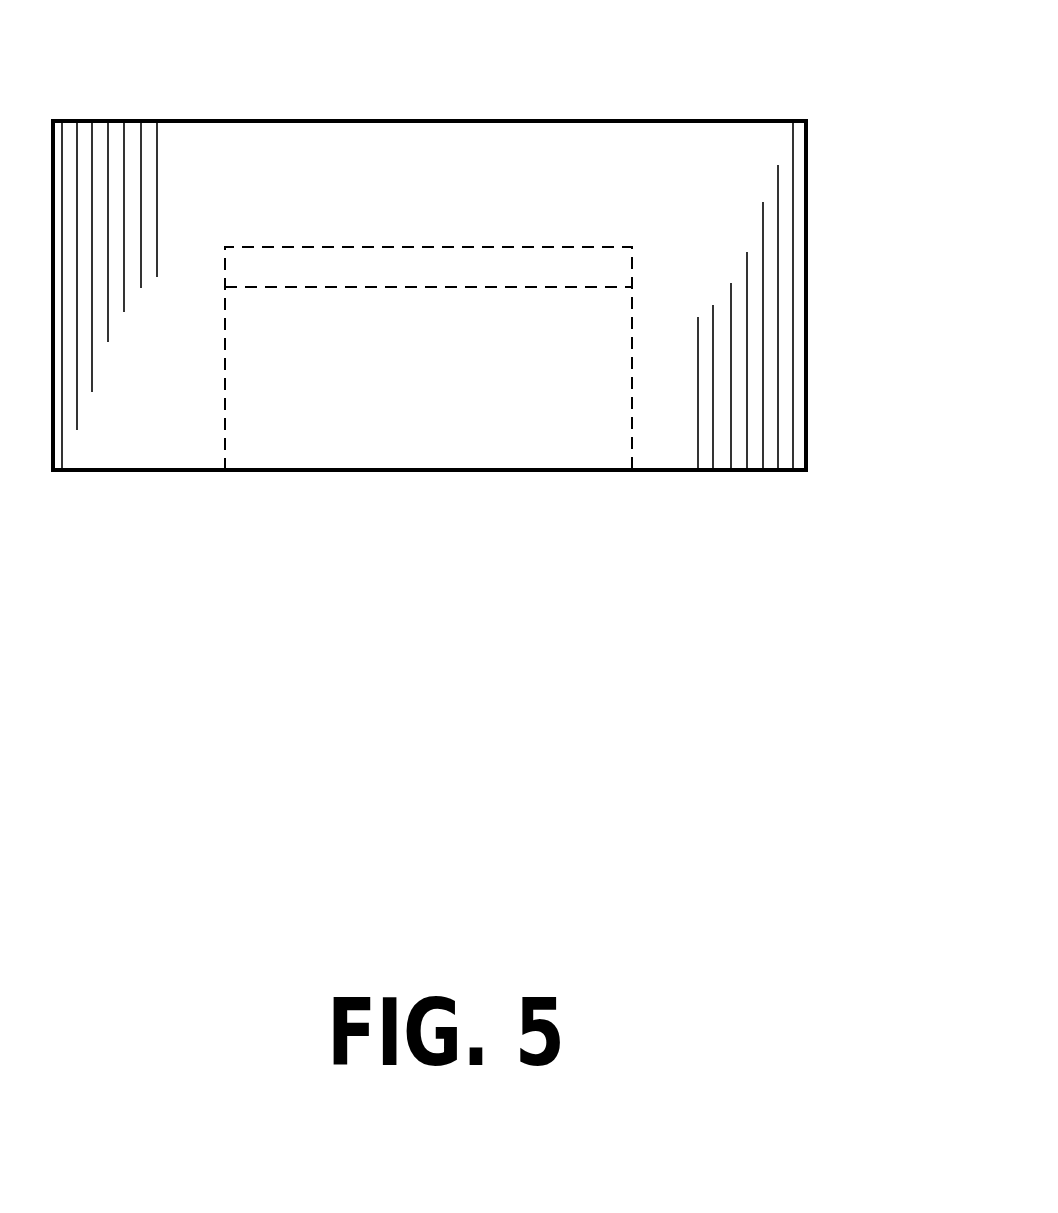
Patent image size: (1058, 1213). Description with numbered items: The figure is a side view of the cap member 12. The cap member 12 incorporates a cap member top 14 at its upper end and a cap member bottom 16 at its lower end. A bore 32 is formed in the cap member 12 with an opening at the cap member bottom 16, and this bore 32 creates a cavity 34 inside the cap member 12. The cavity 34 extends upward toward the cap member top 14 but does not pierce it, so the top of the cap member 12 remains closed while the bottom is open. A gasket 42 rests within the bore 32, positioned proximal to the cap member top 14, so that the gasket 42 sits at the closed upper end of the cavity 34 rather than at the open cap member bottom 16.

The cap member 12 is at (777, 304).
The cap member top 14 is at (584, 118).
The cap member bottom 16 is at (162, 472).
The bore 32 is at (632, 472).
The cavity 34 is at (445, 410).
The gasket 42 is at (320, 263).